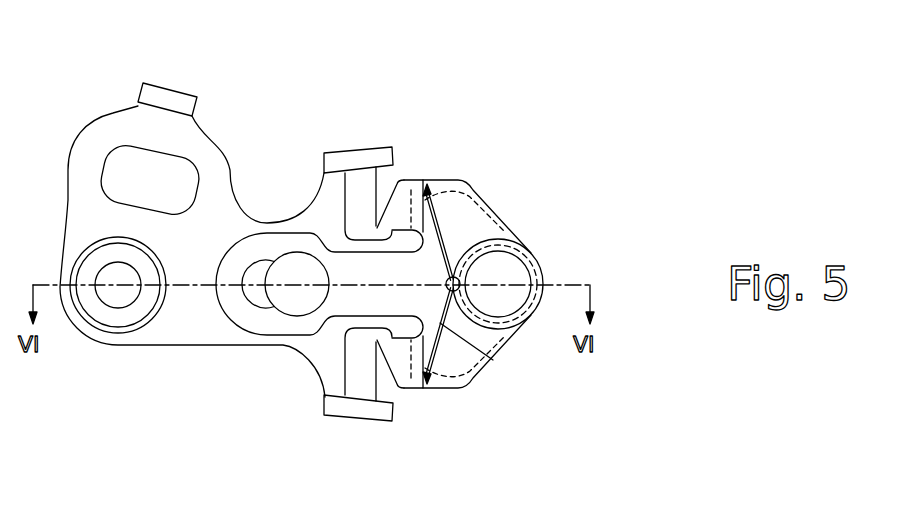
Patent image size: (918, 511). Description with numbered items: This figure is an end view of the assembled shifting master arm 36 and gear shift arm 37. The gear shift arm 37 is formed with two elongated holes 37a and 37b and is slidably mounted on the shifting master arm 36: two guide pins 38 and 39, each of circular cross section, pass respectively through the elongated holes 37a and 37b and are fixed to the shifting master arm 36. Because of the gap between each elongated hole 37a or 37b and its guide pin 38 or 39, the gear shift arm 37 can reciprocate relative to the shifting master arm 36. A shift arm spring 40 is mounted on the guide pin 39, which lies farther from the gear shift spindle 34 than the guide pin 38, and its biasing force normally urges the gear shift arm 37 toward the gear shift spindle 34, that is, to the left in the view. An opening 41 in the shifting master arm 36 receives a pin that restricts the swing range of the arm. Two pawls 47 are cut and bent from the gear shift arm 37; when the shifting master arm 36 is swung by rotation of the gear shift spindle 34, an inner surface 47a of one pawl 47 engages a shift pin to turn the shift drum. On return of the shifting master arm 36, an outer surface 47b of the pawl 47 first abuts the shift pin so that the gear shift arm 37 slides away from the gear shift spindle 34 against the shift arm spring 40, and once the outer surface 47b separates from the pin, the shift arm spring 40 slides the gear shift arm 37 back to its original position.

The gear shift spindle 34 is at (110, 315).
The shifting master arm 36 is at (206, 251).
The gear shift arm 37 is at (468, 220).
The elongated hole 37a is at (259, 272).
The elongated hole 37b is at (455, 320).
The guide pin 38 is at (295, 298).
The guide pin 39 is at (507, 273).
The shift arm spring 40 is at (432, 205).
The opening 41 is at (157, 191).
The pawl 47 is at (395, 210).
The inner surface 47a is at (348, 168).
The outer surface 47b is at (377, 222).